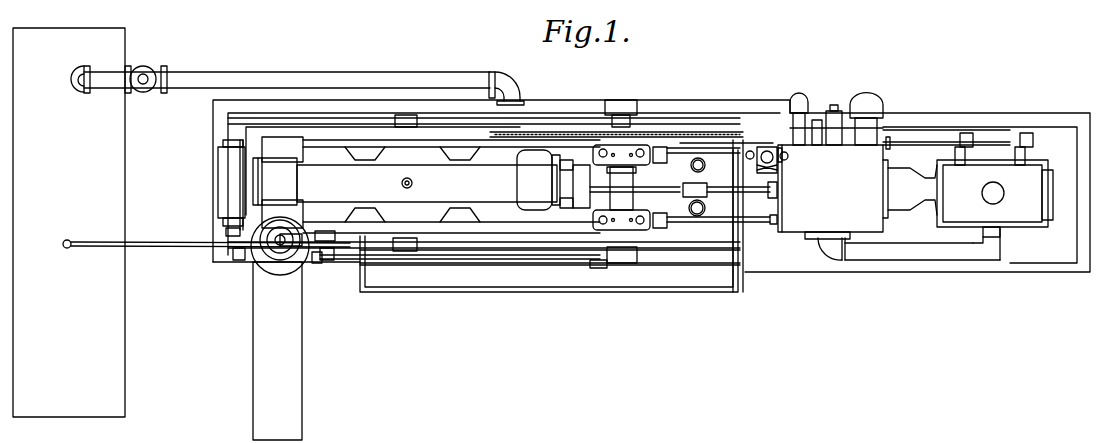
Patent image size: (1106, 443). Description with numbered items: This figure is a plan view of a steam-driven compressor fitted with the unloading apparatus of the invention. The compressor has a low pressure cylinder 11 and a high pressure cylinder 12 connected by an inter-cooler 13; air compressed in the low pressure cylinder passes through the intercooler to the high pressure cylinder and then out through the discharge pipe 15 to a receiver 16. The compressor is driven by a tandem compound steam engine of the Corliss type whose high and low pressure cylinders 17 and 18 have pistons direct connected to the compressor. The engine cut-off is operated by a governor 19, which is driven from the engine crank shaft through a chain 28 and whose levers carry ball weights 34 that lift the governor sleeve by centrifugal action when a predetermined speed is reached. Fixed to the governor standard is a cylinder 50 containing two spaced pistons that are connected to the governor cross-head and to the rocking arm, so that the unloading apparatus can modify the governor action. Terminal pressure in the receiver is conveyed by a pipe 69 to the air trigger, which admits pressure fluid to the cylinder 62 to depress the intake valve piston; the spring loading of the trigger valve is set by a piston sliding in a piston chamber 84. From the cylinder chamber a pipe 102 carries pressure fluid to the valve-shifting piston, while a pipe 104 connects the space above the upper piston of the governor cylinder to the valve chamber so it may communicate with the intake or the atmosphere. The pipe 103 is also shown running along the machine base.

The low pressure cylinder 11 is at (222, 178).
The high pressure cylinder 12 is at (557, 162).
The inter-cooler 13 is at (443, 180).
The discharge pipe 15 is at (331, 82).
The receiver 16 is at (112, 331).
The high pressure cylinder of engine 17 is at (1020, 215).
The low pressure cylinder of engine 18 is at (793, 225).
The governor 19 is at (788, 158).
The chain 28 is at (705, 210).
The ball weights 34 is at (794, 167).
The cylinder 50 is at (760, 147).
The cylinder 62 is at (276, 240).
The pipe 69 is at (157, 248).
The piston chamber 84 is at (280, 262).
The pipe 102 is at (284, 236).
The return pipe 103 is at (535, 292).
The pipe 104 is at (456, 270).